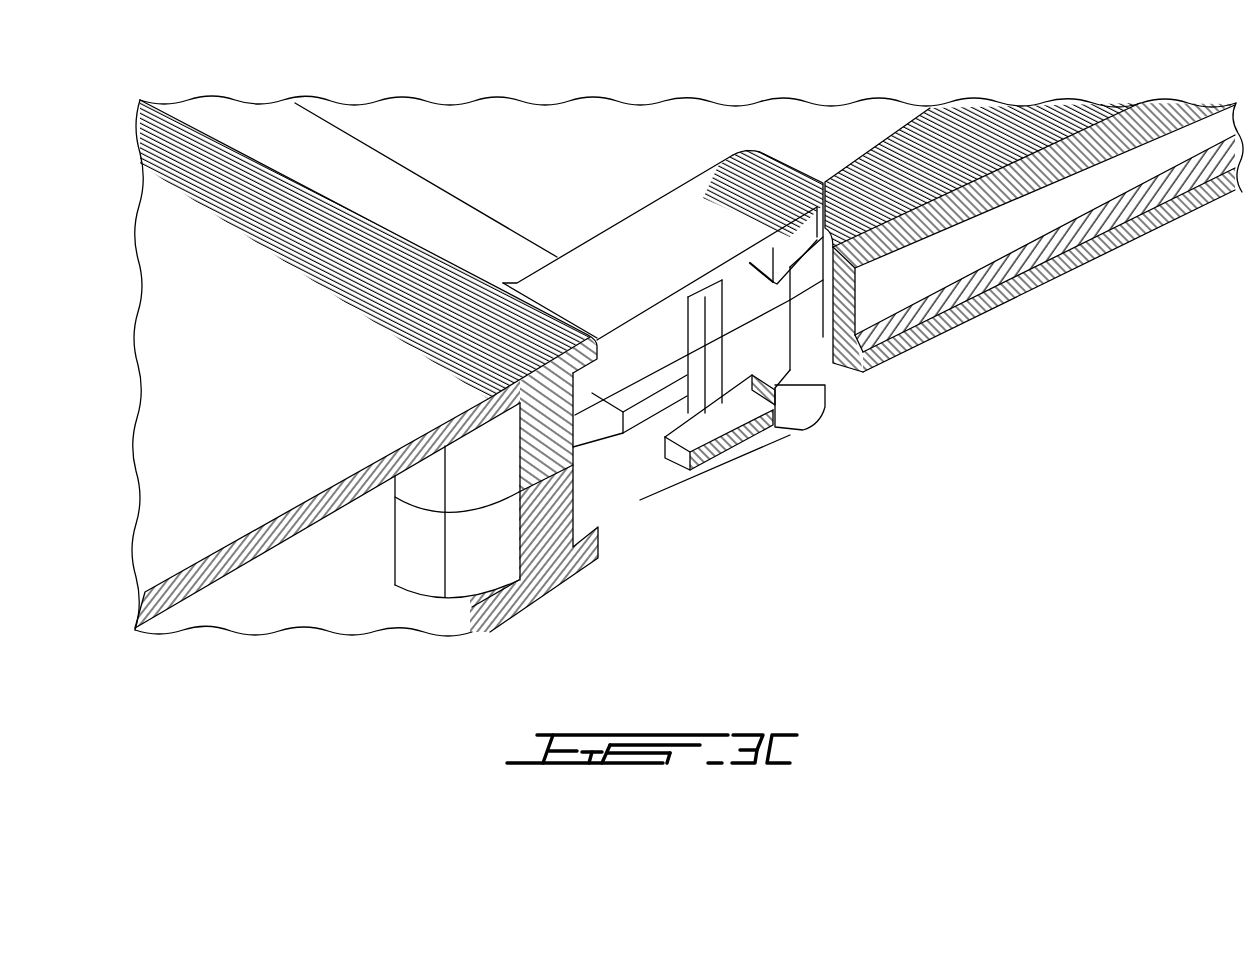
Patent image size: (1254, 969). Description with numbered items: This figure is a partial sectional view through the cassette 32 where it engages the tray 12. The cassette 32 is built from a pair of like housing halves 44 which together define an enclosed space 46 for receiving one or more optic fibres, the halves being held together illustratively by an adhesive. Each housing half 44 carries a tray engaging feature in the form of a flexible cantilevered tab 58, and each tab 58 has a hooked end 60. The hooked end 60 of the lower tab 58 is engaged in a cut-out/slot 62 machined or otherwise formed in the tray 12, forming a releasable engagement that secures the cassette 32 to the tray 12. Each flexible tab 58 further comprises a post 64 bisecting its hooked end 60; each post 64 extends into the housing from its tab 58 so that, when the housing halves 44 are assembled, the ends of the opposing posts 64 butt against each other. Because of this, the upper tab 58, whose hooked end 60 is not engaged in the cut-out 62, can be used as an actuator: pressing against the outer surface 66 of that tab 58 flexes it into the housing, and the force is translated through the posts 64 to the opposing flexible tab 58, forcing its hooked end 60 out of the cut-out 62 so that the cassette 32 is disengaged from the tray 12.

The tray 12 is at (1053, 268).
The cassette 32 is at (490, 165).
The housing half 44 is at (263, 530).
The enclosed space 46 is at (953, 227).
The flexible cantilevered tab 58 is at (655, 230).
The hooked end 60 is at (790, 235).
The cut-out/slot 62 is at (858, 370).
The post 64 is at (737, 295).
The outer surface 66 is at (652, 433).